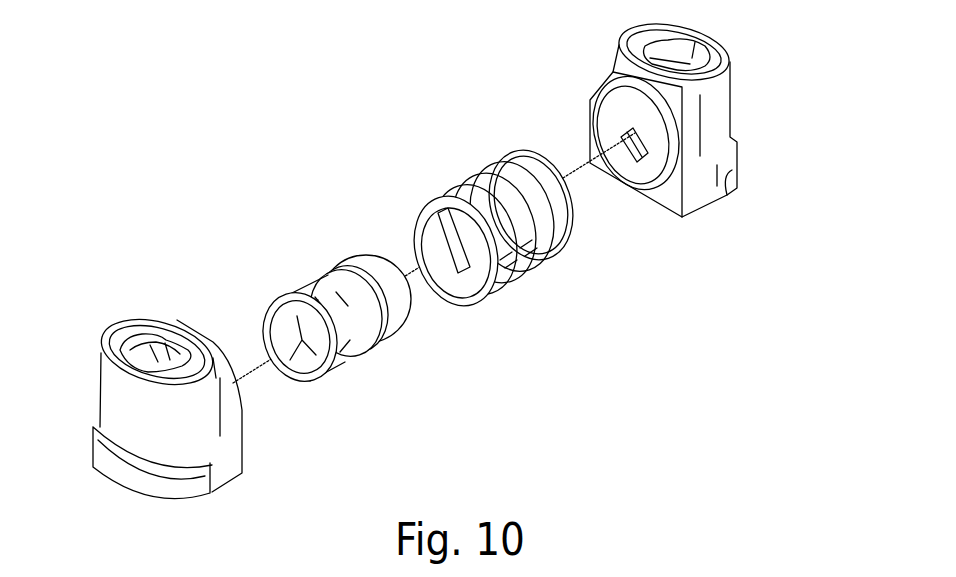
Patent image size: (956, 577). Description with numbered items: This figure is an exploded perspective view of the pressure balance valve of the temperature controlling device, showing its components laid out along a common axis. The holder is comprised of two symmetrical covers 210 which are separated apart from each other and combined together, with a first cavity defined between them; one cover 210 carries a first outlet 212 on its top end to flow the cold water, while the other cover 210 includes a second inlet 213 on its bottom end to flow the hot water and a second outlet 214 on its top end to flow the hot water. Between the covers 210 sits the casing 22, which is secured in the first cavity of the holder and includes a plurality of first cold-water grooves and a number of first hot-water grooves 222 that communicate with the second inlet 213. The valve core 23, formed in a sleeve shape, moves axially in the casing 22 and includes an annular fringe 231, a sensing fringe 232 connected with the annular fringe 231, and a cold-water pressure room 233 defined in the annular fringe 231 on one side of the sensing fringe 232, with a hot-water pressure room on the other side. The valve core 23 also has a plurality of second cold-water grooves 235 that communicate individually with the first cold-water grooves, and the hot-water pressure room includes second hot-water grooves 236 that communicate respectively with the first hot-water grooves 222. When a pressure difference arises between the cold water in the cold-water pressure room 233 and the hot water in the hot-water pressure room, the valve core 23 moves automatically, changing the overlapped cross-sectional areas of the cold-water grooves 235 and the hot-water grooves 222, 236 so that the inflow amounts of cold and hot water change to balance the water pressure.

The cover 210 is at (419, 254).
The first outlet 212 is at (149, 338).
The second inlet 213 is at (650, 163).
The second outlet 214 is at (694, 53).
The casing 22 is at (490, 229).
The first hot-water groove 222 is at (528, 188).
The valve core 23 is at (364, 315).
The annular fringe 231 is at (399, 340).
The sensing fringe 232 is at (350, 352).
The cold-water pressure room 233 is at (303, 362).
The second cold-water groove 235 is at (333, 292).
The second hot-water groove 236 is at (385, 295).